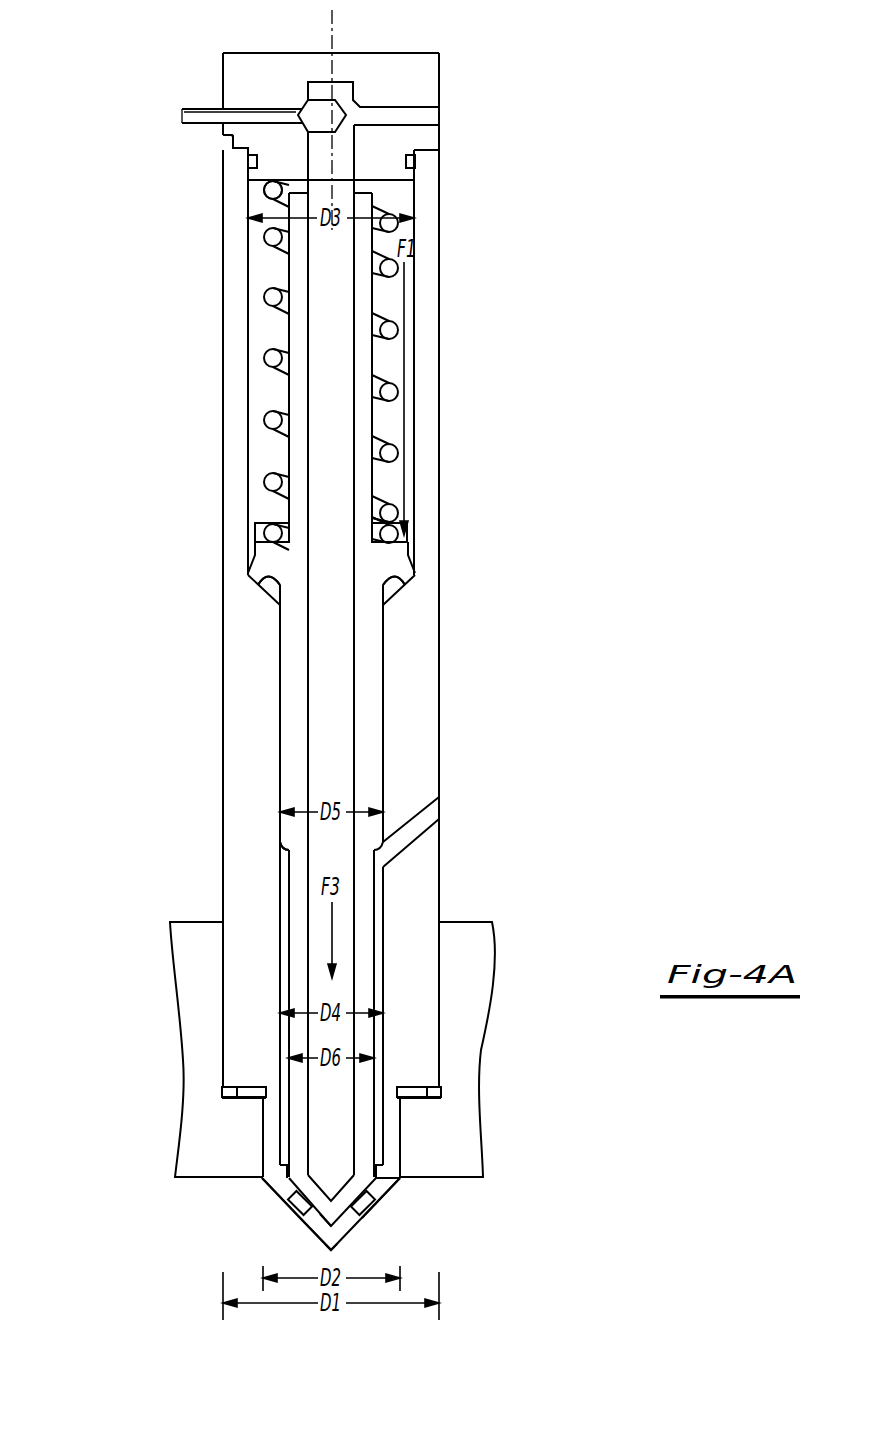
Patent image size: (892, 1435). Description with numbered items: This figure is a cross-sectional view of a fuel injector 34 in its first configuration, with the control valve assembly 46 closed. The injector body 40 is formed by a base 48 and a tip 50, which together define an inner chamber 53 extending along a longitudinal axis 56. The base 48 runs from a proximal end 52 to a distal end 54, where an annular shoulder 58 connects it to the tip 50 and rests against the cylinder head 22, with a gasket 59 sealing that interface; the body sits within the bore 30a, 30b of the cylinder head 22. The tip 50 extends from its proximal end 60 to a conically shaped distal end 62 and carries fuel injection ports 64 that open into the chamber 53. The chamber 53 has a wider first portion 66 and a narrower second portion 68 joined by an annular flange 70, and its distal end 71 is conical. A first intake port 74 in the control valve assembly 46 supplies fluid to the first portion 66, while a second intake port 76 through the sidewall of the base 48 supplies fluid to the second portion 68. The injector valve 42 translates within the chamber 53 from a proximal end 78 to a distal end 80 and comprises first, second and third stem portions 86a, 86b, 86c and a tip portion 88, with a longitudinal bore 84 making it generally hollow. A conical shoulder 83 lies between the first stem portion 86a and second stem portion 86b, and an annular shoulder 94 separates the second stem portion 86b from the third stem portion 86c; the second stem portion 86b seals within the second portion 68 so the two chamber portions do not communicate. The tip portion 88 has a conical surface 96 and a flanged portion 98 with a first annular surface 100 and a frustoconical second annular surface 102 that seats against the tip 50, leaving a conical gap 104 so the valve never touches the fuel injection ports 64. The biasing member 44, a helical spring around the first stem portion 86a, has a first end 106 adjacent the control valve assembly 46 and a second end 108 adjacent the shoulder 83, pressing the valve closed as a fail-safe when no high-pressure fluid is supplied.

The cylinder head 22 is at (472, 1145).
The bore 30a is at (280, 1153).
The bore 30b is at (280, 1153).
The fuel injector 34 is at (208, 79).
The injector body 40 is at (203, 518).
The injector valve 42 is at (373, 963).
The biasing member 44 is at (266, 297).
The control valve assembly 46 is at (182, 116).
The base portion 48 is at (247, 648).
The tip portion 50 is at (370, 1215).
The proximal end 52 is at (226, 137).
The inner chamber 53 is at (285, 895).
The distal end 54 is at (220, 1097).
The longitudinal axis 56 is at (332, 38).
The annular shoulder 58 is at (407, 1087).
The gasket 59 is at (255, 1087).
The proximal end 60 is at (401, 1113).
The distal end 62 is at (333, 1249).
The fuel injection ports 64 is at (288, 1208).
The first portion 66 is at (258, 332).
The second portion 68 is at (378, 883).
The annular flange 70 is at (280, 586).
The distal end 71 is at (320, 1229).
The first intake port 74 is at (457, 96).
The second intake port 76 is at (430, 813).
The proximal end 78 is at (368, 207).
The distal end 80 is at (323, 1236).
The annular flange 83 is at (383, 604).
The bore 84 is at (308, 594).
The first stem portion 86a is at (360, 363).
The second stem portion 86b is at (370, 625).
The third stem portion 86c is at (297, 917).
The tip portion 88 is at (331, 1198).
The annular shoulder 94 is at (288, 848).
The conically shaped surface 96 is at (310, 1215).
The flanged portion 98 is at (370, 1180).
The first annular surface 100 is at (363, 1200).
The second annular surface 102 is at (290, 1198).
The gap 104 is at (367, 1190).
The first end 106 is at (265, 191).
The second end 108 is at (266, 532).